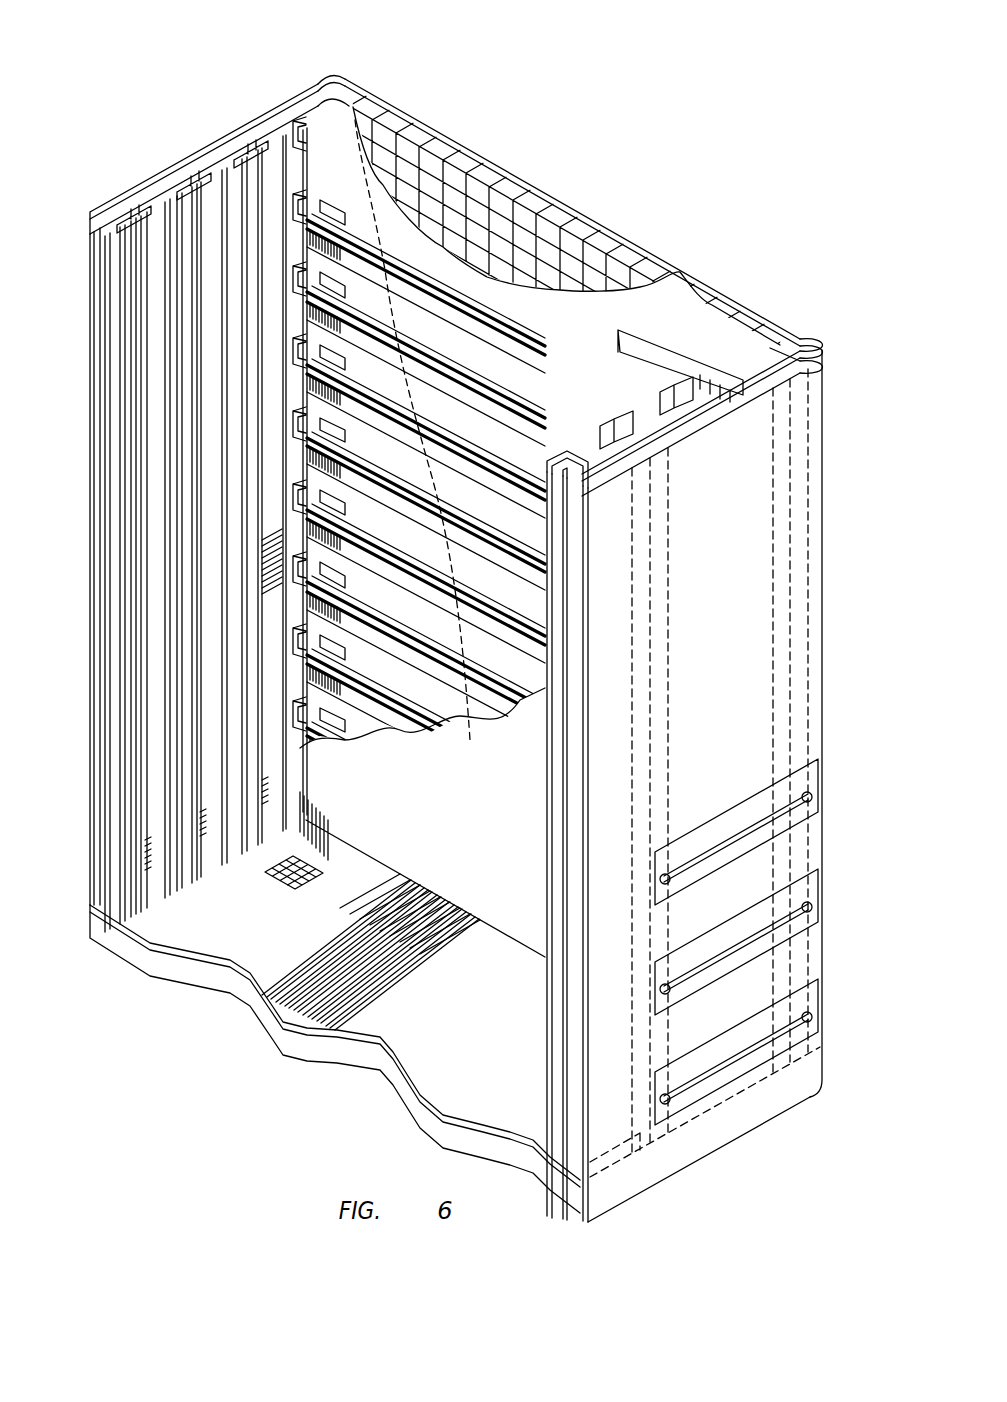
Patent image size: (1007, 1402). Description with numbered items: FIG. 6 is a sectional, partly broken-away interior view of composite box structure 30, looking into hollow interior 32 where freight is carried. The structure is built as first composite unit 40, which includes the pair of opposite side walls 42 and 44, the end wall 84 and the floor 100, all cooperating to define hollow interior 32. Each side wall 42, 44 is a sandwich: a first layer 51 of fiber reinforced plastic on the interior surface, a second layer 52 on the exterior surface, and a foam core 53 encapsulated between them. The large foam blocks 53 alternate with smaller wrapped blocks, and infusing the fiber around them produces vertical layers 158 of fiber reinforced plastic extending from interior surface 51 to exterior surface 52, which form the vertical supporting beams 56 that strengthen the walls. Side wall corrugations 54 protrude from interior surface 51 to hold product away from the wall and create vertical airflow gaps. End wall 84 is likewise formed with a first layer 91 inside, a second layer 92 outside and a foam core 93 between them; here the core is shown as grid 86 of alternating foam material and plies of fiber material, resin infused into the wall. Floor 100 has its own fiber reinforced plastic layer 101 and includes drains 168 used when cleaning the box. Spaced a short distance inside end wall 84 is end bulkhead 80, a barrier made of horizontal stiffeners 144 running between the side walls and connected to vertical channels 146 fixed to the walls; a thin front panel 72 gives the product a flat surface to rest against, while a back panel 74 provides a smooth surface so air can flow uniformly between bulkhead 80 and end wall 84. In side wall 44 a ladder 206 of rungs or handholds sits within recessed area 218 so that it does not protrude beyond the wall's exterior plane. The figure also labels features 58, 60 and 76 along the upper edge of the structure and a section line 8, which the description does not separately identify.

The composite box structure 30 is at (724, 151).
The hollow interior 32 is at (272, 1082).
The first composite unit 40 is at (832, 571).
The side wall 42 is at (197, 79).
The side wall 44 is at (607, 1142).
The first layer of fiber reinforced plastic 51 is at (170, 401).
The second layer of fiber reinforced plastic 52 is at (705, 684).
The foam core 53 is at (263, 116).
The side wall corrugations 54 is at (223, 876).
The vertical supporting beams 56 is at (173, 171).
The rear edge 58 is at (823, 494).
The rounded corner 60 is at (336, 71).
The front panel 72 is at (450, 857).
The back panel 74 is at (398, 706).
The top frame 76 is at (302, 91).
The end bulkhead 80 is at (381, 851).
The end wall 84 is at (640, 151).
The grid of alternating foam material and plies of fiber material 86 is at (526, 276).
The first layer of fiber reinforced plastic 91 is at (701, 328).
The second layer of fiber reinforced plastic 92 is at (448, 136).
The foam core 93 is at (488, 172).
The floor 100 is at (146, 964).
The layer of fiber reinforced plastic 101 is at (428, 1091).
The horizontal stiffeners 144 is at (352, 317).
The vertical channels 146 is at (318, 736).
The vertical layers of fiber reinforced plastic 158 is at (164, 186).
The drains 168 is at (268, 874).
The ladder 206 is at (752, 943).
The recessed area 218 is at (733, 964).
The section line 8 is at (748, 838).